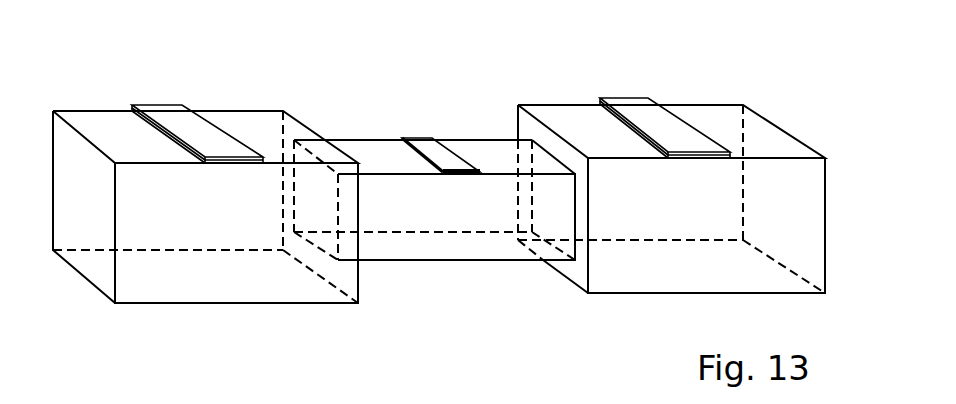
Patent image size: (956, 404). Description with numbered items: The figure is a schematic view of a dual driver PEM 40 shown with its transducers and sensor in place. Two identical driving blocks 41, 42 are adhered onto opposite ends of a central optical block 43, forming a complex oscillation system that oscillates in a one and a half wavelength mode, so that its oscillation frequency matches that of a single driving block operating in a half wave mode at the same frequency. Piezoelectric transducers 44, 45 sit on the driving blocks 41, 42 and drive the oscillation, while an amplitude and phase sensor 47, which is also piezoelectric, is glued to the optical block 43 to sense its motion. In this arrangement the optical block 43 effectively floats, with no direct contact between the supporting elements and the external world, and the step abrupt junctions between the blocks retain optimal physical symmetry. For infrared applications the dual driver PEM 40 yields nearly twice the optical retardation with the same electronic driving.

The dual driver PEM 40 is at (755, 45).
The driving block 41 is at (226, 295).
The driving block 42 is at (638, 293).
The optical block 43 is at (468, 253).
The transducer 44 is at (167, 112).
The transducer 45 is at (640, 107).
The amplitude and phase sensor 47 is at (427, 143).